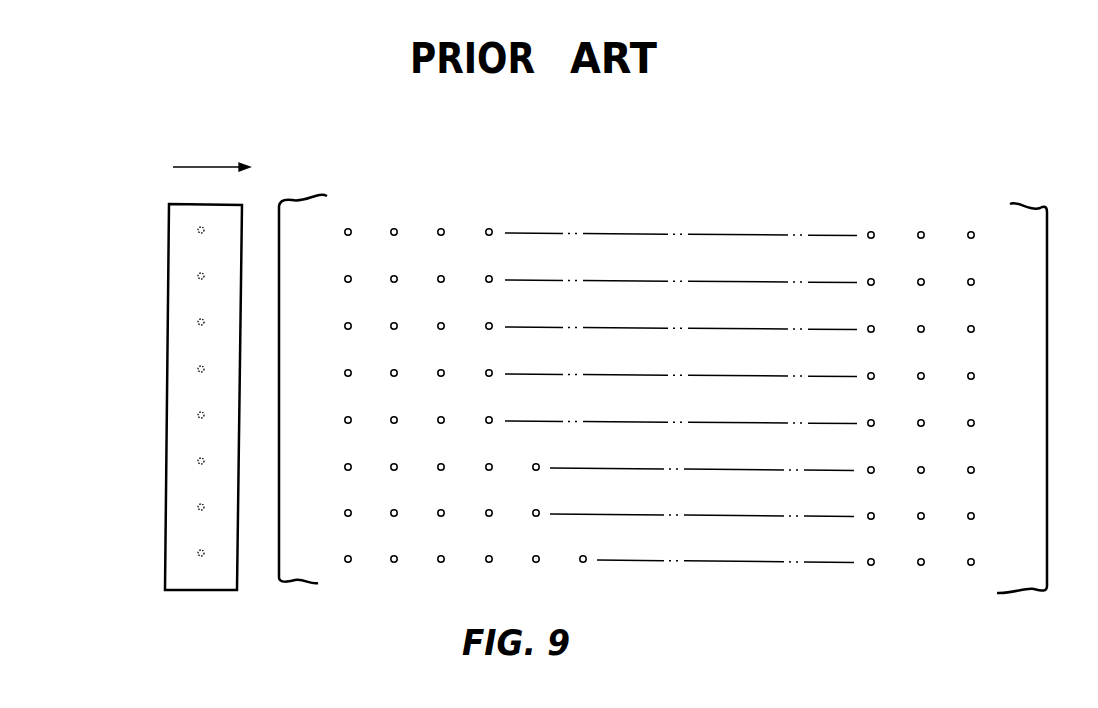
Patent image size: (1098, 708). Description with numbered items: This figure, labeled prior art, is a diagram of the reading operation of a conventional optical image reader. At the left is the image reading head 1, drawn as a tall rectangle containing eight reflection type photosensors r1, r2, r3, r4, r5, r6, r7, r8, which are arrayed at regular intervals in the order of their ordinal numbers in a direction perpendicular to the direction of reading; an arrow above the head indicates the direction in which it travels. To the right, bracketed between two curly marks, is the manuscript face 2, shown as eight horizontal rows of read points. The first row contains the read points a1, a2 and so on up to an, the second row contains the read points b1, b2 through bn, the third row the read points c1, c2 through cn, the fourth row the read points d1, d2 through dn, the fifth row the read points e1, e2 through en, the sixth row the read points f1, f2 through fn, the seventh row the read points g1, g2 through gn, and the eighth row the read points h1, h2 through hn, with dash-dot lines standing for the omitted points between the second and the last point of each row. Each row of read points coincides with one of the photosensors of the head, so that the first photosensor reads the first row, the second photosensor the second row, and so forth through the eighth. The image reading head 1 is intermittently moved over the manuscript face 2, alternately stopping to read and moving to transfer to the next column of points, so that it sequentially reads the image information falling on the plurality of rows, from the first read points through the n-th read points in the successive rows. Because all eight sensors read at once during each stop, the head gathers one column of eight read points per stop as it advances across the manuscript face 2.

The image reading head 1 is at (187, 396).
The manuscript face 2 is at (684, 394).
The reflection type photosensor r1 is at (197, 229).
The reflection type photosensor r2 is at (197, 275).
The reflection type photosensor r3 is at (197, 321).
The reflection type photosensor r4 is at (197, 368).
The reflection type photosensor r5 is at (197, 414).
The reflection type photosensor r6 is at (197, 460).
The reflection type photosensor r7 is at (197, 506).
The reflection type photosensor r8 is at (197, 552).
The read point a1 is at (345, 231).
The read point a2 is at (391, 231).
The read point an is at (975, 233).
The read point b1 is at (345, 278).
The read point b2 is at (391, 278).
The read point bn is at (975, 280).
The read point c1 is at (345, 325).
The read point c2 is at (391, 325).
The read point cn is at (975, 327).
The read point d1 is at (345, 372).
The read point d2 is at (391, 372).
The read point dn is at (975, 374).
The read point e1 is at (345, 419).
The read point e2 is at (391, 419).
The read point en is at (975, 421).
The read point f1 is at (345, 466).
The read point f2 is at (391, 466).
The read point fn is at (975, 468).
The read point g1 is at (345, 512).
The read point g2 is at (391, 512).
The read point gn is at (975, 514).
The read point h1 is at (345, 558).
The read point h2 is at (391, 558).
The read point hn is at (975, 560).